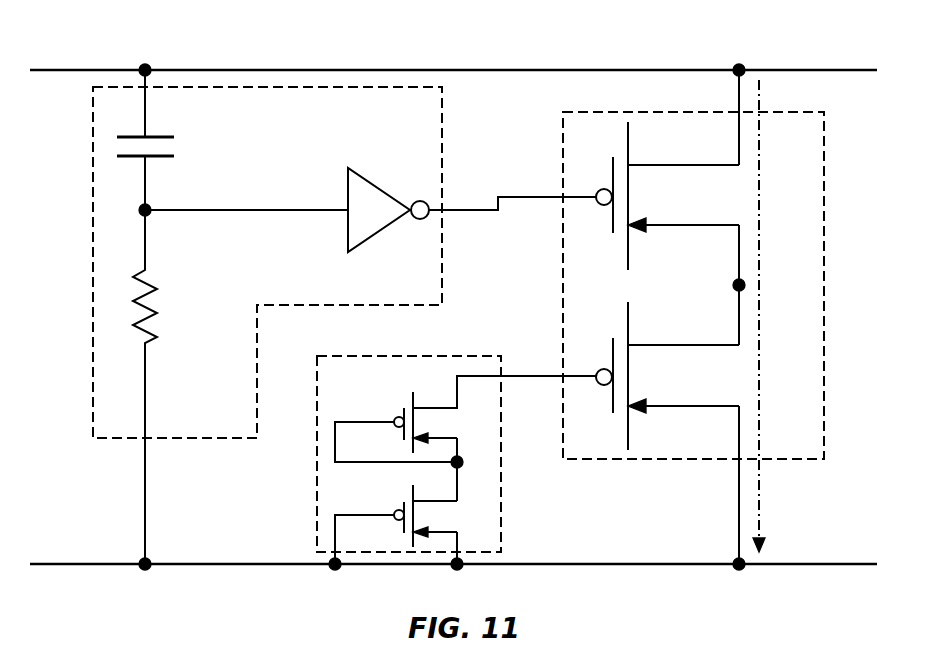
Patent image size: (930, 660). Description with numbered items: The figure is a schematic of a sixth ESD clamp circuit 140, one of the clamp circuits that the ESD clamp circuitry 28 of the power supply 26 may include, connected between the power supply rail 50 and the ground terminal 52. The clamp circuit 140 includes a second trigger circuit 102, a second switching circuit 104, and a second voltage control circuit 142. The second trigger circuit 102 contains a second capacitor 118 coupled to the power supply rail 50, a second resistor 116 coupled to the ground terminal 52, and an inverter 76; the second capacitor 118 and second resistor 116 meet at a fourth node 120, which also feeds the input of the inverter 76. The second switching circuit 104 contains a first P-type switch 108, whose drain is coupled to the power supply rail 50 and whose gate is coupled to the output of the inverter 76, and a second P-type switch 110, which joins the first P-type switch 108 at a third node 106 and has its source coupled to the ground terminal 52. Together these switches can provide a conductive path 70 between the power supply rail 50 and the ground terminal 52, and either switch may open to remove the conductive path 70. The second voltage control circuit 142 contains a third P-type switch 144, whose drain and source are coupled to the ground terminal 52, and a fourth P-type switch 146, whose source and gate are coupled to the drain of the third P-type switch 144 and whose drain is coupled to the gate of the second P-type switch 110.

The power supply 26 is at (97, 46).
The ESD clamp circuitry 28 is at (97, 46).
The sixth ESD clamp circuit 140 is at (121, 54).
The power supply rail 50 is at (442, 70).
The ground terminal 52 is at (600, 564).
The conductive path 70 is at (761, 276).
The inverter 76 is at (385, 192).
The second trigger circuit 102 is at (92, 285).
The second switching circuit 104 is at (826, 296).
The third node 106 is at (734, 284).
The first P-type switch 108 is at (622, 145).
The second P-type switch 110 is at (622, 325).
The second resistor 116 is at (160, 312).
The second capacitor 118 is at (131, 136).
The fourth node 120 is at (152, 208).
The second voltage control circuit 142 is at (503, 506).
The third P-type switch 144 is at (408, 493).
The fourth P-type switch 146 is at (408, 400).